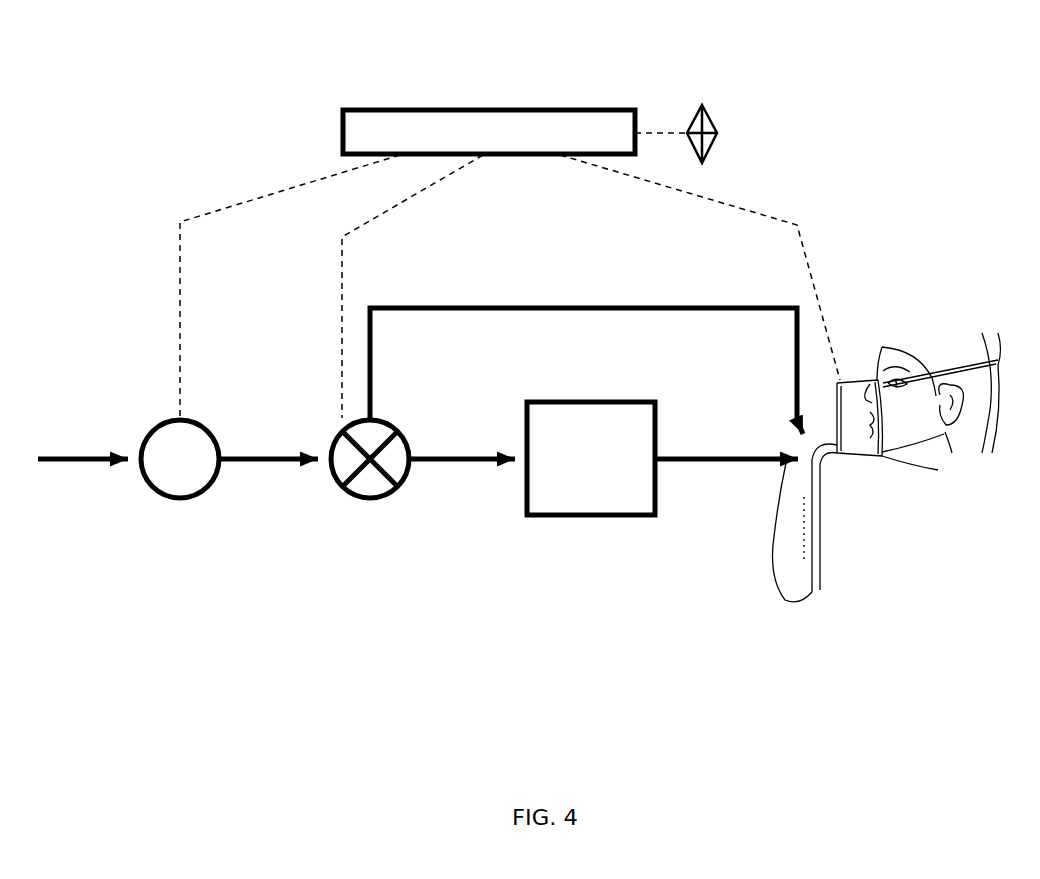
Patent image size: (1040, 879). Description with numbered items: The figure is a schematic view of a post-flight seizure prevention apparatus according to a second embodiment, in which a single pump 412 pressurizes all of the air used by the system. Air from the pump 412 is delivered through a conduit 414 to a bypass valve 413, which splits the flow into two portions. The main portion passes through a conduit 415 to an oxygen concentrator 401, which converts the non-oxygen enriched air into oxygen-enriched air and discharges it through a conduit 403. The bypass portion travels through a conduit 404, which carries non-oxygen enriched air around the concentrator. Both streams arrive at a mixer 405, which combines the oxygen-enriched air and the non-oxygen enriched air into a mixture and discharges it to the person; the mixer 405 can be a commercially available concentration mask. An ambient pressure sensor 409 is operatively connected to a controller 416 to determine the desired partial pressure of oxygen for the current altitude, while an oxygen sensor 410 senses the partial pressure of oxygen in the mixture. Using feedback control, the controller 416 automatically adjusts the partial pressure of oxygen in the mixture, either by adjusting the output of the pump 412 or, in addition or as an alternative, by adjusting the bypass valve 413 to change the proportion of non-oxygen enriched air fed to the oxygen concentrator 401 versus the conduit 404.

The oxygen concentrator 401 is at (540, 526).
The conduit 403 is at (741, 444).
The conduit 404 is at (507, 292).
The mixer 405 is at (783, 614).
The ambient pressure sensor 409 is at (734, 139).
The oxygen sensor 410 is at (844, 366).
The pump 412 is at (174, 508).
The bypass valve 413 is at (271, 444).
The conduit 414 is at (355, 510).
The conduit 415 is at (470, 444).
The controller 416 is at (519, 98).